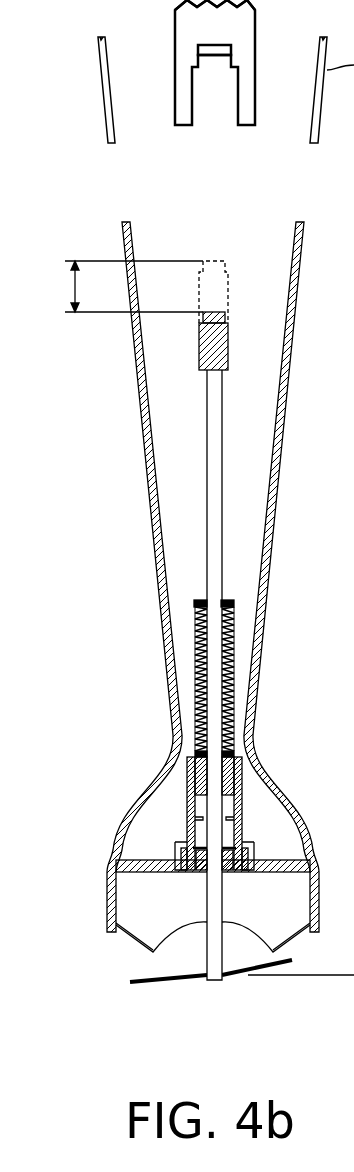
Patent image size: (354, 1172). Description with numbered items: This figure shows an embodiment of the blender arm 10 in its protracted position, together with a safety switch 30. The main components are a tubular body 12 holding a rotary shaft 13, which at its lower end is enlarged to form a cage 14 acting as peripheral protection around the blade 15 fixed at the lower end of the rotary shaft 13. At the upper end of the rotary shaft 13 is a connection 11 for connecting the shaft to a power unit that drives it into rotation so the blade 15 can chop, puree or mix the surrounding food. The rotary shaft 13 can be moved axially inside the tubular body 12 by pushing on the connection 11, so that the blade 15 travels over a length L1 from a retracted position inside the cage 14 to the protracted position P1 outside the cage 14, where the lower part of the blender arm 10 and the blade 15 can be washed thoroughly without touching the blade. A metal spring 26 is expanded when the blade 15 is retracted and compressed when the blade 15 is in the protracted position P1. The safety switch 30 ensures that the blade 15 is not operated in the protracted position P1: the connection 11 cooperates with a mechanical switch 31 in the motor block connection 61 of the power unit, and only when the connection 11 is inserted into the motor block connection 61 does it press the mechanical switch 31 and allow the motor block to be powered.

The blender arm 10 is at (135, 592).
The connection 11 is at (199, 350).
The tubular body 12 is at (155, 537).
The rotary shaft 13 is at (207, 447).
The cage 14 is at (107, 900).
The blade 15 is at (177, 983).
The metal spring 26 is at (195, 715).
The safety switch 30 is at (245, 143).
The mechanical switch 31 is at (198, 48).
The motor block connection 61 is at (243, 18).
The length L1 is at (123, 286).
The protracted position P1 is at (70, 988).